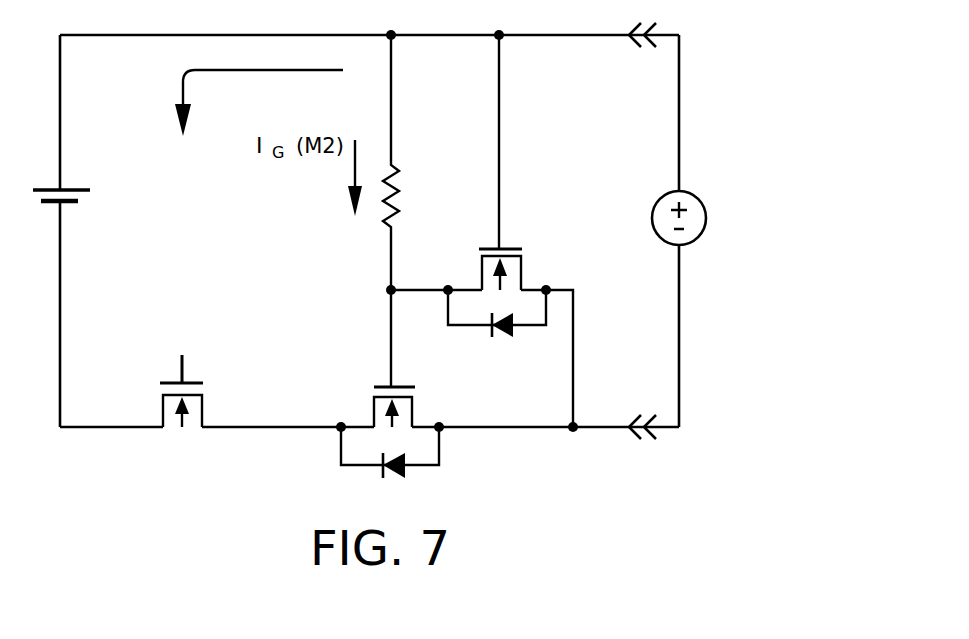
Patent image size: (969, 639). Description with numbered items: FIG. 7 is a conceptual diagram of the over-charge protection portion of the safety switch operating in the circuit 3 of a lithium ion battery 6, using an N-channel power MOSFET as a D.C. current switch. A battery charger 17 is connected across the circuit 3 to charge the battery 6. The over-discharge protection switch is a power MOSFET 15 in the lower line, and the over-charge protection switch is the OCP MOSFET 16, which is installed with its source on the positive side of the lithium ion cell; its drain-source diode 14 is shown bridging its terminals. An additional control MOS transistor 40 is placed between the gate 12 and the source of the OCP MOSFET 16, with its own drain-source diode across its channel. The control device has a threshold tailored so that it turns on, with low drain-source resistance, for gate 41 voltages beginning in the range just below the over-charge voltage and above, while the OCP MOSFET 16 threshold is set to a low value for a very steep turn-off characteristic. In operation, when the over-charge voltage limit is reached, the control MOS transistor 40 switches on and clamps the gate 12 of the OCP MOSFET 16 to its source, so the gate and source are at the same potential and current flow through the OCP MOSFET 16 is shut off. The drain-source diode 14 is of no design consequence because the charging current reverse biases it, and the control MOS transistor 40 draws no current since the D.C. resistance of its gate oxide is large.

The circuit 3 is at (308, 34).
The lithium ion battery 6 is at (82, 188).
The gate 12 is at (377, 384).
The drain-source diode 14 is at (383, 471).
The power MOSFET 15 is at (210, 411).
The OCP MOSFET 16 is at (362, 411).
The battery charger 17 is at (659, 202).
The control MOS transistor 40 is at (521, 251).
The gate 41 is at (490, 248).